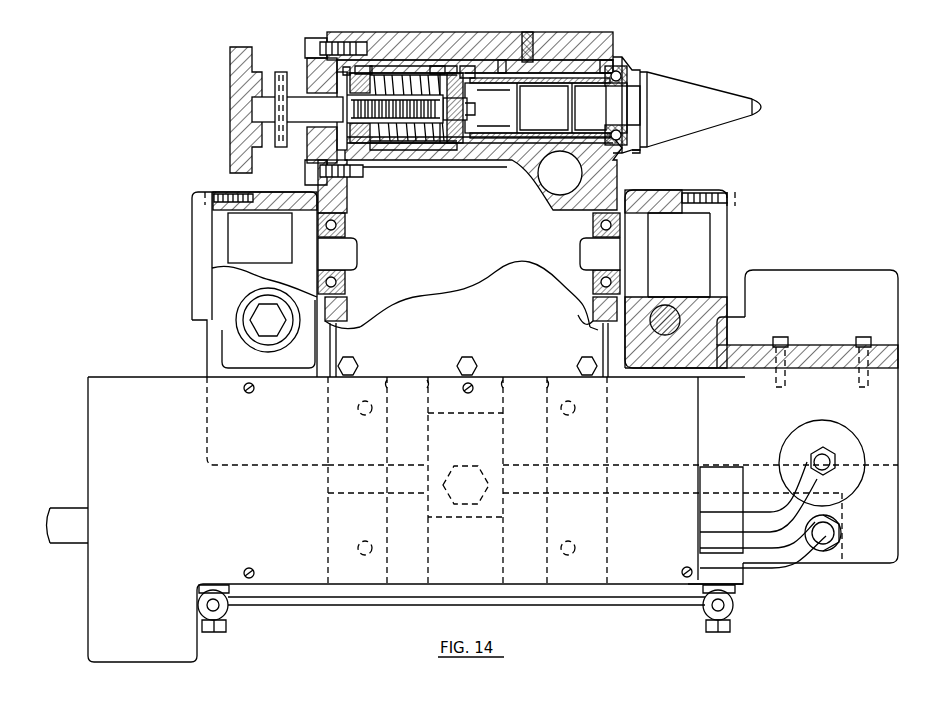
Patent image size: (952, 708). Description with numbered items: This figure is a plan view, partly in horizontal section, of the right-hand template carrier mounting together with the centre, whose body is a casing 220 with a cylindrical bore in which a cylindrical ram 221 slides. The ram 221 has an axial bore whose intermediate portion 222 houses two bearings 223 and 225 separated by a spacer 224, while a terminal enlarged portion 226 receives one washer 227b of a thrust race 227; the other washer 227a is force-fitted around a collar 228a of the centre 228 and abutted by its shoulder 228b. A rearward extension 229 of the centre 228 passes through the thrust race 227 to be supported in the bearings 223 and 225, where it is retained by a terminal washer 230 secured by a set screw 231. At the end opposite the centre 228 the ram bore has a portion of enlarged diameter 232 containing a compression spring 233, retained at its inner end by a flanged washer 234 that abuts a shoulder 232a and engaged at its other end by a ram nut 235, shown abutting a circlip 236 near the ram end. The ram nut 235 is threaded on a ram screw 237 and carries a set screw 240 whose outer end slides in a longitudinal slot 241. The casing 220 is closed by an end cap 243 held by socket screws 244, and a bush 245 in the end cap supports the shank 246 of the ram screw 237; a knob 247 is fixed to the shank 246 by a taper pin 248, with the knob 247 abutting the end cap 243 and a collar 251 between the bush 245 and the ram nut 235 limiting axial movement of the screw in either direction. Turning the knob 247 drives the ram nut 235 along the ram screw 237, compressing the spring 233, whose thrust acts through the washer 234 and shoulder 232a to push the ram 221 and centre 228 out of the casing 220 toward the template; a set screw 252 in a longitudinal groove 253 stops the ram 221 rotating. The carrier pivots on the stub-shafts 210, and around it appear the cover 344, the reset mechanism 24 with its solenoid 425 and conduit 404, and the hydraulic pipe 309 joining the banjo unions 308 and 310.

The reset mechanism 24 is at (907, 487).
The stub-shaft 210 is at (357, 257).
The casing 220 is at (410, 37).
The ram 221 is at (436, 66).
The intermediate portion 222 is at (463, 143).
The bearing 223 is at (546, 108).
The spacer 224 is at (544, 108).
The bearing 225 is at (593, 108).
The terminal enlarged portion 226 is at (607, 72).
The thrust race 227 is at (620, 70).
The washer 227a is at (643, 153).
The washer 227b is at (640, 138).
The centre 228 is at (767, 107).
The collar 228a is at (633, 107).
The shoulder 228b is at (643, 77).
The rearward extension 229 is at (560, 173).
The terminal washer 230 is at (466, 66).
The set screw 231 is at (462, 110).
The portion of enlarged diameter 232 is at (457, 72).
The shoulder 232a is at (447, 147).
The compression spring 233 is at (387, 147).
The flanged washer 234 is at (430, 147).
The ram nut 235 is at (362, 66).
The circlip 236 is at (341, 67).
The ram screw 237 is at (423, 150).
The set screw 240 is at (360, 150).
The slot 241 is at (386, 150).
The end cap 243 is at (313, 40).
The socket screws 244 is at (307, 50).
The bush 245 is at (313, 90).
The shank 246 is at (253, 110).
The knob 247 is at (230, 65).
The taper pin 248 is at (280, 147).
The collar 251 is at (343, 110).
The set screw 252 is at (528, 32).
The longitudinal groove 253 is at (503, 58).
The banjo union 308 is at (735, 605).
The pipe 309 is at (610, 605).
The banjo union 310 is at (230, 614).
The cover 344 is at (97, 475).
The conduit 404 is at (805, 570).
The solenoid 425 is at (845, 440).